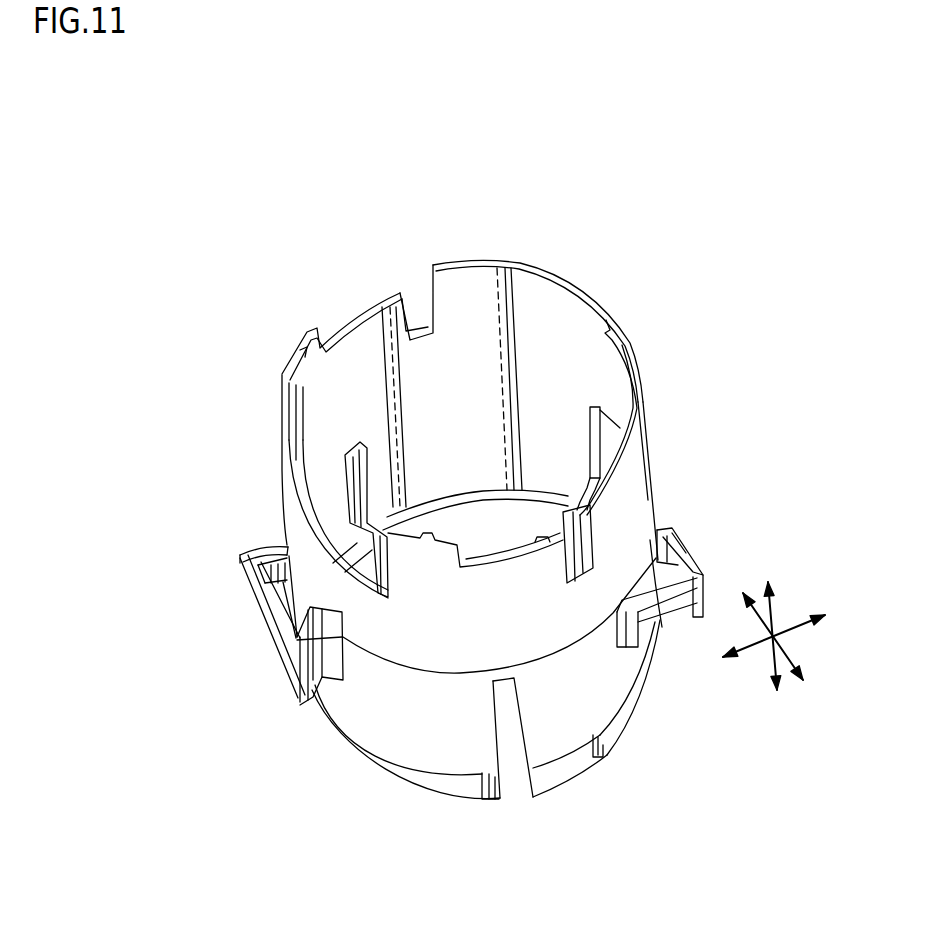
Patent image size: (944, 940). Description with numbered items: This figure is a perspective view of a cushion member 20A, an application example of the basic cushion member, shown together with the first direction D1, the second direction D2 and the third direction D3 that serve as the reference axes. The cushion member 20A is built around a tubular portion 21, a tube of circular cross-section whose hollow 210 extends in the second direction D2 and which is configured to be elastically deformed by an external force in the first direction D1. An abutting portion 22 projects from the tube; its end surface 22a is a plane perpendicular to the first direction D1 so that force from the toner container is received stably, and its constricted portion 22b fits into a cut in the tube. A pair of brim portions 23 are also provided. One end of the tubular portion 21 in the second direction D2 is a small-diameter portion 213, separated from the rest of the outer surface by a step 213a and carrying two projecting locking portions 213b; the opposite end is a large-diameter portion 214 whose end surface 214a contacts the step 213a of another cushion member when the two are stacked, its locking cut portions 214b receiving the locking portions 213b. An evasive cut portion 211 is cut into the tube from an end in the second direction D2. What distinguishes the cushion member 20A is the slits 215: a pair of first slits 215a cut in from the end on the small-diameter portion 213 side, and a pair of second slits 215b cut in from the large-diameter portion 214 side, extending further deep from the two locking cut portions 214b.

The cushion member 20A is at (271, 228).
The tubular portion 21 is at (656, 387).
The hollow 210 is at (470, 313).
The evasive cut portion 211 is at (286, 452).
The small-diameter portion 213 is at (647, 707).
The step 213a is at (353, 727).
The locking portions 213b is at (487, 797).
The large-diameter portion 214 is at (638, 357).
The end surface 214a is at (553, 270).
The locking cut portions 214b is at (340, 323).
The slits 215 is at (585, 517).
The first slits 215a is at (346, 453).
The second slits 215b is at (430, 287).
The abutting portion 22 is at (246, 539).
The end surface 22a is at (256, 618).
The constricted portion 22b is at (283, 545).
The brim portions 23 is at (693, 548).
The first direction D1 is at (792, 626).
The second direction D2 is at (771, 662).
The third direction D3 is at (790, 653).